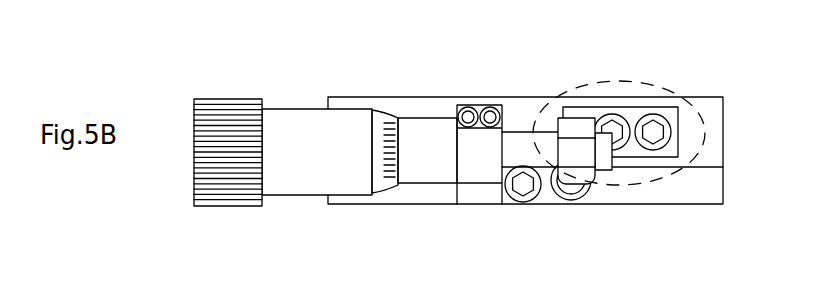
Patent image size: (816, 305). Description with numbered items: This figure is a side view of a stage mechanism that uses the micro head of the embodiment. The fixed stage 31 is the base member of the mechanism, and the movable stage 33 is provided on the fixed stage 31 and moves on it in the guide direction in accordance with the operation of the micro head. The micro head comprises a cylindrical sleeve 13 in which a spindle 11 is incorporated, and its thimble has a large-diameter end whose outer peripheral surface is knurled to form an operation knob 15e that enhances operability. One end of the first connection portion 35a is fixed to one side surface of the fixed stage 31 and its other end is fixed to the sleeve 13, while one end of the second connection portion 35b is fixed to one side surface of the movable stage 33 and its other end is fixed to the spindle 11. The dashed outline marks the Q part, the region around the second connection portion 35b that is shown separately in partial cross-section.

The spindle 11 is at (533, 150).
The sleeve 13 is at (437, 148).
The operation knob 15e is at (225, 170).
The fixed stage 31 is at (415, 193).
The movable stage 33 is at (420, 108).
The first connection portion 35a is at (475, 148).
The second connection portion 35b is at (643, 117).
The Q part Q is at (663, 186).